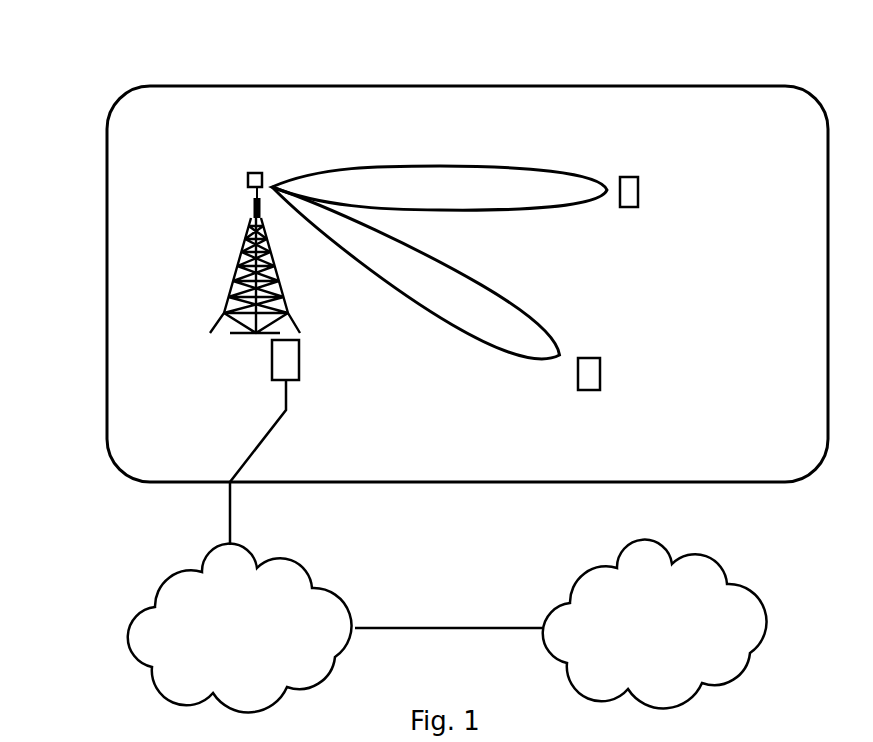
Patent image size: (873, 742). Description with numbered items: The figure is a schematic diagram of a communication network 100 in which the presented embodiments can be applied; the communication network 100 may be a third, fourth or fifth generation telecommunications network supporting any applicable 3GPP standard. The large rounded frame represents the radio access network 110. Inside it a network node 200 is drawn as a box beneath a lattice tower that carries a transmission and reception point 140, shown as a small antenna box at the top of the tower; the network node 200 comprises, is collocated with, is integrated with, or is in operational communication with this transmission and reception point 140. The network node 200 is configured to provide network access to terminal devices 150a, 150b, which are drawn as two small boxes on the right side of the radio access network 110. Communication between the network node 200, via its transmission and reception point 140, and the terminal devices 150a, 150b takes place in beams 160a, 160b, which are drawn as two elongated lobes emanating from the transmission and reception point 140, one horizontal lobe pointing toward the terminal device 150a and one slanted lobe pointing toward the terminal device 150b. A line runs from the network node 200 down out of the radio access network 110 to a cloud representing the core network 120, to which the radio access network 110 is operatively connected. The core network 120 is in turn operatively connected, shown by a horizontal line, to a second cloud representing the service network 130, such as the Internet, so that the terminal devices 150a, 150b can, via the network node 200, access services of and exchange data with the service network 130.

The communication network 100 is at (180, 57).
The radio access network 110 is at (107, 320).
The core network 120 is at (335, 628).
The service network 130 is at (655, 624).
The transmission and reception point 140 is at (248, 179).
The terminal device 150a is at (638, 190).
The terminal device 150b is at (600, 371).
The beam 160a is at (437, 168).
The beam 160b is at (408, 293).
The network node 200 is at (283, 356).